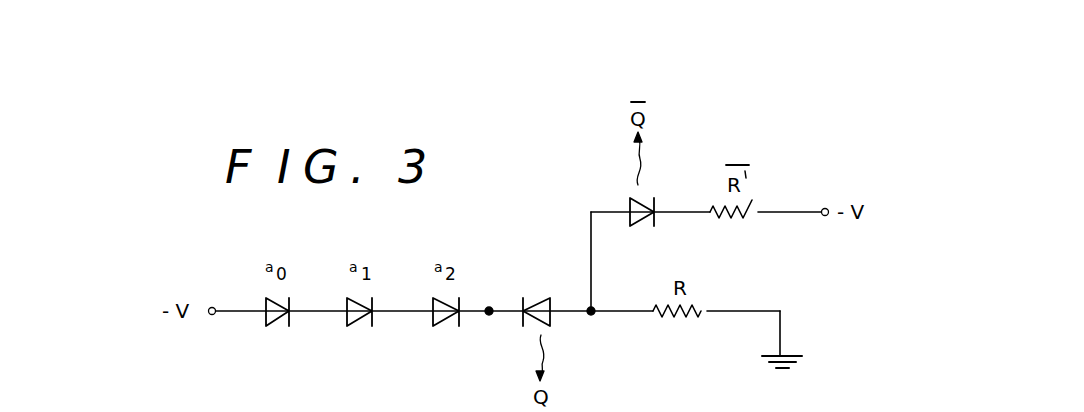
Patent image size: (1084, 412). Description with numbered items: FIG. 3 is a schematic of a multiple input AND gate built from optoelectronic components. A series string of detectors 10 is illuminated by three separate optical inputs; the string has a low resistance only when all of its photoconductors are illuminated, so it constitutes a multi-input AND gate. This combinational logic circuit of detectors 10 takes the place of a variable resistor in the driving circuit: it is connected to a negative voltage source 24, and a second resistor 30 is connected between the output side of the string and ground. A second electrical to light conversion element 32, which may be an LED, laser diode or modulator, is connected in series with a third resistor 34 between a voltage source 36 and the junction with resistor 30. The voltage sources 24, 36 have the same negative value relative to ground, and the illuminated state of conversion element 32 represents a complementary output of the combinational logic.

The detector 10 is at (272, 327).
The voltage source 24 is at (212, 315).
The second resistor 30 is at (673, 318).
The second electrical to light conversion element 32 is at (629, 206).
The third resistor 34 is at (720, 218).
The voltage source 36 is at (825, 216).